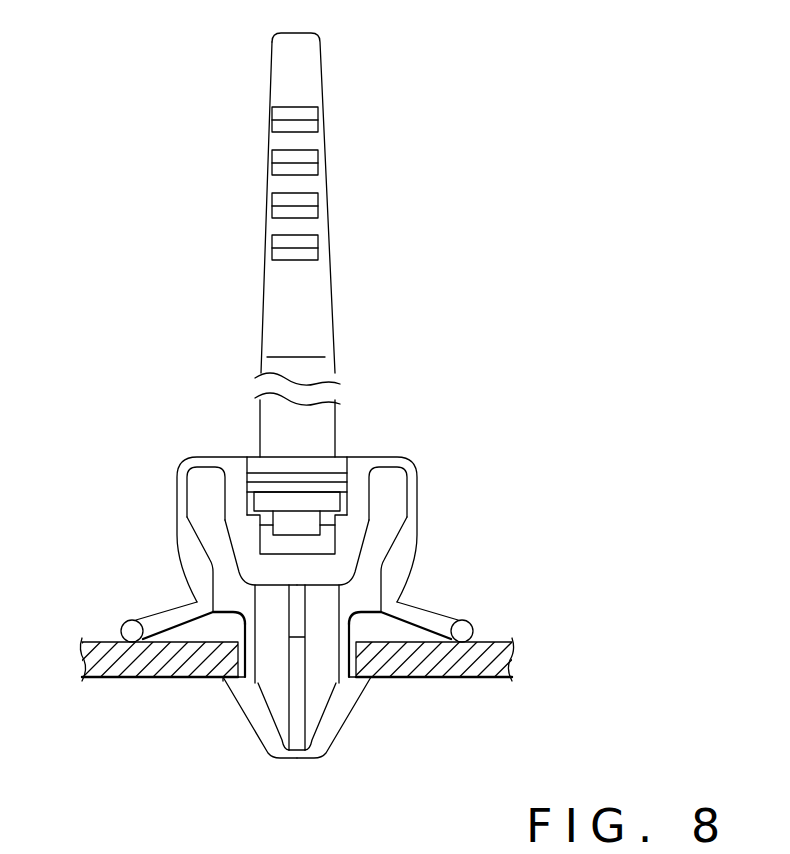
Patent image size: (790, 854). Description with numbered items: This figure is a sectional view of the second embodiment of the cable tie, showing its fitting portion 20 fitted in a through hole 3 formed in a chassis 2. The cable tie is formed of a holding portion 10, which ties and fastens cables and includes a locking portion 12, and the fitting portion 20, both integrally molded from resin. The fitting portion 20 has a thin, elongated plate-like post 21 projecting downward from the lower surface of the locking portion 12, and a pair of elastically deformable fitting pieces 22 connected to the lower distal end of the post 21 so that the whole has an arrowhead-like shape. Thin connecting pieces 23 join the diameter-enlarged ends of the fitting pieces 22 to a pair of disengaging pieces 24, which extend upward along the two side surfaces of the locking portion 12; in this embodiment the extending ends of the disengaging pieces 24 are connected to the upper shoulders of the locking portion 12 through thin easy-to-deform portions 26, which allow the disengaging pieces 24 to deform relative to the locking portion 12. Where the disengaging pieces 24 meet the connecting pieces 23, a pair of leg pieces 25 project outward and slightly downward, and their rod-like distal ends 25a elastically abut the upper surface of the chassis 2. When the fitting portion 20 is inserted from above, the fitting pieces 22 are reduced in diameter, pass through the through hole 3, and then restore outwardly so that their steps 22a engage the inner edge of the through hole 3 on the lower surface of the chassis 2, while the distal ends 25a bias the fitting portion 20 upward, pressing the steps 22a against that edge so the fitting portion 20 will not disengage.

The holding portion 10 is at (350, 310).
The locking portion 12 is at (356, 470).
The fitting portion 20 is at (296, 605).
The post 21 is at (298, 714).
The fitting pieces 22 is at (257, 729).
The steps 22a is at (228, 688).
The connecting pieces 23 is at (238, 634).
The disengaging pieces 24 is at (178, 548).
The leg pieces 25 is at (162, 614).
The distal ends 25a is at (124, 628).
The easy-to-deform portions 26 is at (193, 468).
The chassis 2 is at (483, 680).
The through hole 3 is at (338, 726).